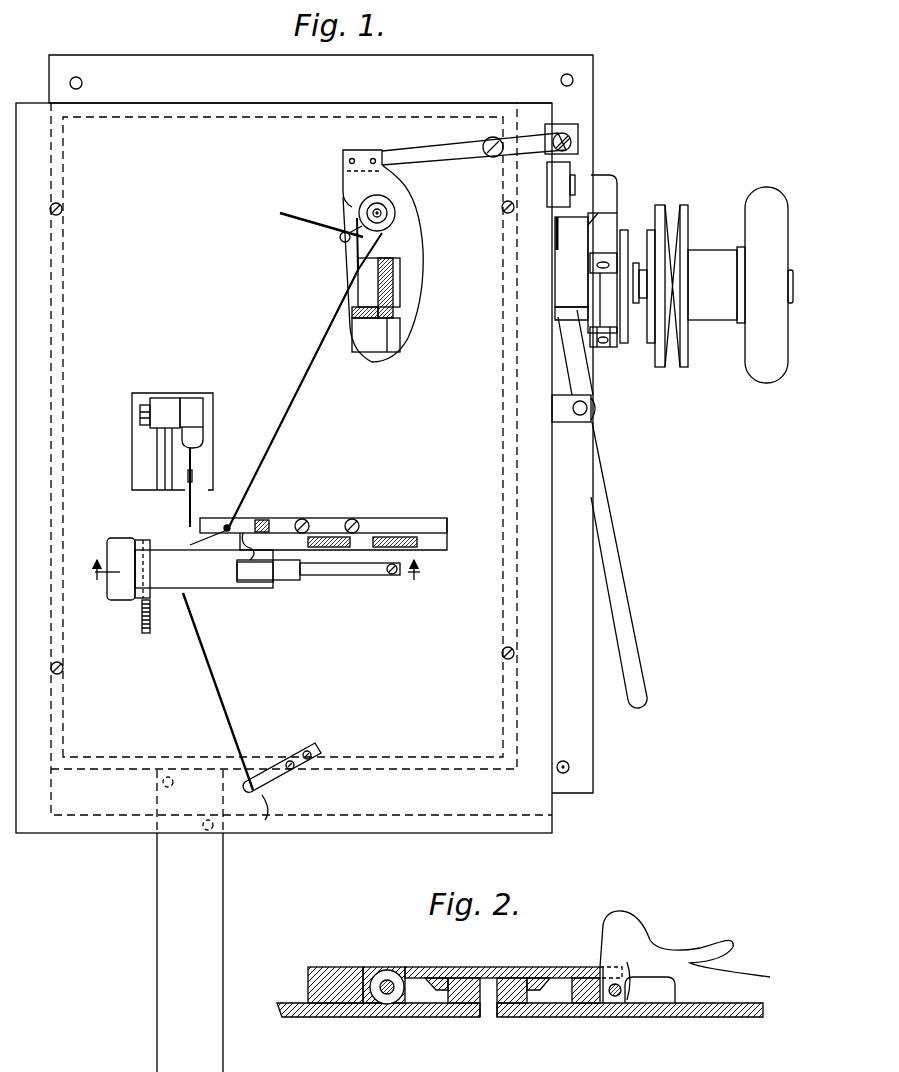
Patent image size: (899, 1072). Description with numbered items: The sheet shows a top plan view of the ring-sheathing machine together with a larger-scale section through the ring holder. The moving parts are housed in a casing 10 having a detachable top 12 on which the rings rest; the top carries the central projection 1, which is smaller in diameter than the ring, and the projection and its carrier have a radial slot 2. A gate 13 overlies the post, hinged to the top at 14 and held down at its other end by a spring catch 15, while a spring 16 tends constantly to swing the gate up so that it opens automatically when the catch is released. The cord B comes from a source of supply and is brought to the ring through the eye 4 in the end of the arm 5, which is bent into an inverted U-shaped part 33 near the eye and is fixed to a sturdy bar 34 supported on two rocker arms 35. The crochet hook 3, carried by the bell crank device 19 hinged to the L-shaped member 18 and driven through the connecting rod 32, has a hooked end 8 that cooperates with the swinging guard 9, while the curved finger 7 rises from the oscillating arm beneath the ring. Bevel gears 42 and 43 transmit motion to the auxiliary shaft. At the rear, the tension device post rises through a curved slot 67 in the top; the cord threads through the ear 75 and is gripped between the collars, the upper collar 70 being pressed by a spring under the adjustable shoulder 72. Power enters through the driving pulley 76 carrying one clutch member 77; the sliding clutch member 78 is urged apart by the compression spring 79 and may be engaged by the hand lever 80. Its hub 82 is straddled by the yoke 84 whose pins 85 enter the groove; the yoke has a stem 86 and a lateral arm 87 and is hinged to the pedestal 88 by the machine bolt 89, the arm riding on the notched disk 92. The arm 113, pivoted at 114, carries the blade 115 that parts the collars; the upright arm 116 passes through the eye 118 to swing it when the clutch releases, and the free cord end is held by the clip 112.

In FIG. 1, the housing or casing 10 is at (457, 56).
In FIG. 1, the detachable top 12 is at (210, 128).
In FIG. 2, the detachable top 12 is at (612, 1012).
In FIG. 1, the swinging arm or lever 113 is at (411, 151).
In FIG. 1, the pivot 114 is at (491, 158).
In FIG. 1, the hole or eye 118 is at (572, 140).
In FIG. 1, the upright lever or arm 116 is at (578, 152).
In FIG. 1, the stationary post or pedestal 88 is at (608, 176).
In FIG. 1, the disk 92 is at (560, 192).
In FIG. 1, the arm 87 is at (560, 224).
In FIG. 1, the stem element 86 is at (605, 224).
In FIG. 1, the machine bolt 89 is at (598, 266).
In FIG. 1, the yoke or fork 84 is at (600, 290).
In FIG. 1, the hub 82 is at (562, 306).
In FIG. 1, the pins 85 is at (609, 350).
In FIG. 1, the clutch member 78 is at (625, 232).
In FIG. 1, the compression spring 79 is at (640, 280).
In FIG. 1, the clutch member 77 is at (655, 238).
In FIG. 1, the driving pulley 76 is at (680, 212).
In FIG. 1, the hand lever 80 is at (622, 509).
In FIG. 1, the blade-like element 115 is at (346, 182).
In FIG. 1, the flange or collar 70 is at (366, 207).
In FIG. 1, the vertically-adjustable shoulder 72 is at (396, 218).
In FIG. 1, the ear 75 is at (340, 238).
In FIG. 1, the curved slot 67 is at (420, 247).
In FIG. 1, the bevel gear 43 is at (400, 283).
In FIG. 1, the bevel gear 42 is at (400, 335).
In FIG. 1, the eye 4 is at (227, 524).
In FIG. 1, the hooked end 8 is at (214, 524).
In FIG. 1, the curved finger 7 is at (248, 532).
In FIG. 1, the connecting rod 32 is at (137, 441).
In FIG. 1, the L-shaped member 18 is at (158, 402).
In FIG. 1, the bell crank device 19 is at (196, 403).
In FIG. 1, the crochet hook 3 is at (194, 470).
In FIG. 1, the swinging guard or gate 9 is at (194, 490).
In FIG. 1, the arm 5 is at (300, 518).
In FIG. 1, the inverted U-shaped part 33 is at (265, 520).
In FIG. 1, the rocker arms 35 is at (335, 537).
In FIG. 1, the bar 34 is at (400, 536).
In FIG. 1, the hinge 14 is at (140, 540).
In FIG. 2, the hinge 14 is at (387, 980).
In FIG. 1, the gate 13 is at (224, 590).
In FIG. 2, the gate 13 is at (501, 968).
In FIG. 1, the slot 2 is at (256, 570).
In FIG. 2, the slot 2 is at (489, 1008).
In FIG. 1, the spring catch 15 is at (290, 581).
In FIG. 2, the spring catch 15 is at (637, 933).
In FIG. 1, the spring 16 is at (141, 622).
In FIG. 1, the cord B is at (218, 668).
In FIG. 1, the clip 112 is at (283, 752).
In FIG. 2, the central boss or projection 1 is at (462, 996).